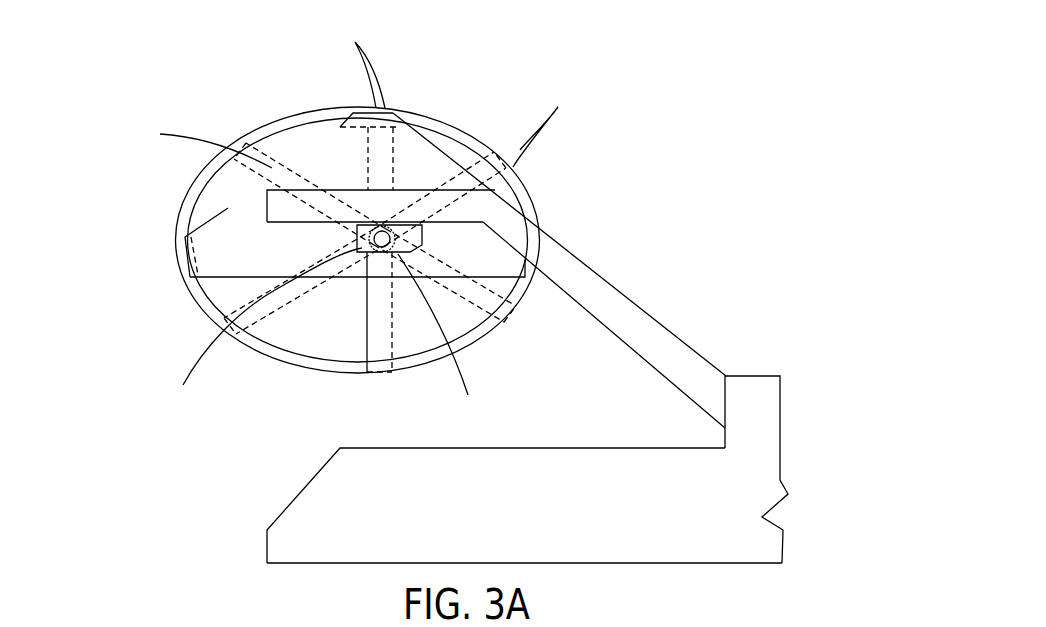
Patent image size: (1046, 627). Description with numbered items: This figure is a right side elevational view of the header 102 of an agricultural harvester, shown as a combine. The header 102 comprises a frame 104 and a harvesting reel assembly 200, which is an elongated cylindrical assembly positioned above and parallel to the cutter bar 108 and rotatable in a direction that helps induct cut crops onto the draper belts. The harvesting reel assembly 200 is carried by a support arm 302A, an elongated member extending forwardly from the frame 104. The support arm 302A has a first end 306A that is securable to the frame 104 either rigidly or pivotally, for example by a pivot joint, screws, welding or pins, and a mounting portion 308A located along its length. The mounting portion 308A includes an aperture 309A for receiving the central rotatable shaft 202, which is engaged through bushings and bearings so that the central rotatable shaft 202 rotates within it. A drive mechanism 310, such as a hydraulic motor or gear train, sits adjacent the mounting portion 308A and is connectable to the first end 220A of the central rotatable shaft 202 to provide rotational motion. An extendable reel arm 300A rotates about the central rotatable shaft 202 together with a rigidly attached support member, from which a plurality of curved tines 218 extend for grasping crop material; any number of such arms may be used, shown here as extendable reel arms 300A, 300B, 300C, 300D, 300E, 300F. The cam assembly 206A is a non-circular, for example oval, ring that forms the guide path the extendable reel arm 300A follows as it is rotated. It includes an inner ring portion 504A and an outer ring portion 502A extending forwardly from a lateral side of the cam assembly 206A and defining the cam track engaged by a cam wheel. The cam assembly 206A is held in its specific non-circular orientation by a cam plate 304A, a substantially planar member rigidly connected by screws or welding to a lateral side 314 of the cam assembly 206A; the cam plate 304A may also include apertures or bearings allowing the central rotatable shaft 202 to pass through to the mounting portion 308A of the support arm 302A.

The header 102 is at (852, 240).
The frame 104 is at (767, 458).
The cutter bar 108 is at (267, 552).
The harvesting reel assembly 200 is at (614, 165).
The central rotatable shaft 202 is at (190, 277).
The cam assembly 206A is at (498, 146).
The tines 218 is at (543, 135).
The first end of the central rotatable shaft 220A is at (378, 260).
The extendable reel arm 300A is at (381, 148).
The extendable reel arm 300B is at (298, 180).
The extendable reel arm 300C is at (293, 296).
The extendable reel arm 300D is at (370, 335).
The extendable reel arm 300E is at (472, 304).
The extendable reel arm 300F is at (480, 172).
The support arm 302A is at (617, 308).
The cam plate 304A is at (228, 228).
The first end of the support arm 306A is at (716, 378).
The mounting portion 308A is at (425, 246).
The aperture 309A is at (388, 248).
The drive mechanism 310 is at (357, 240).
The lateral side of the cam assembly 314 is at (466, 123).
The outer ring portion 502A is at (290, 142).
The inner ring portion 504A is at (265, 187).